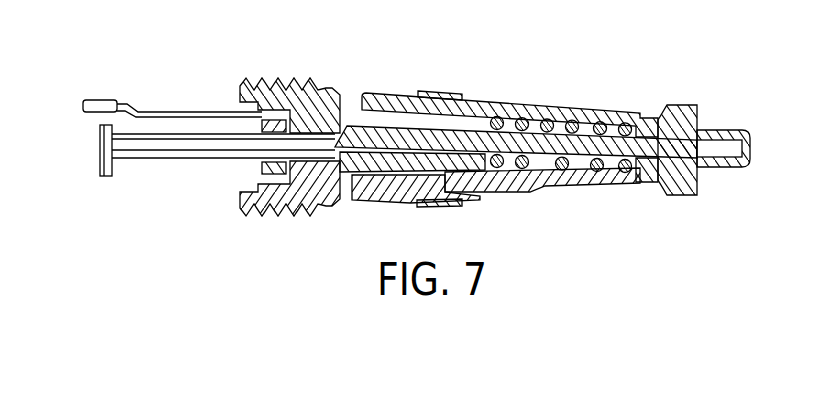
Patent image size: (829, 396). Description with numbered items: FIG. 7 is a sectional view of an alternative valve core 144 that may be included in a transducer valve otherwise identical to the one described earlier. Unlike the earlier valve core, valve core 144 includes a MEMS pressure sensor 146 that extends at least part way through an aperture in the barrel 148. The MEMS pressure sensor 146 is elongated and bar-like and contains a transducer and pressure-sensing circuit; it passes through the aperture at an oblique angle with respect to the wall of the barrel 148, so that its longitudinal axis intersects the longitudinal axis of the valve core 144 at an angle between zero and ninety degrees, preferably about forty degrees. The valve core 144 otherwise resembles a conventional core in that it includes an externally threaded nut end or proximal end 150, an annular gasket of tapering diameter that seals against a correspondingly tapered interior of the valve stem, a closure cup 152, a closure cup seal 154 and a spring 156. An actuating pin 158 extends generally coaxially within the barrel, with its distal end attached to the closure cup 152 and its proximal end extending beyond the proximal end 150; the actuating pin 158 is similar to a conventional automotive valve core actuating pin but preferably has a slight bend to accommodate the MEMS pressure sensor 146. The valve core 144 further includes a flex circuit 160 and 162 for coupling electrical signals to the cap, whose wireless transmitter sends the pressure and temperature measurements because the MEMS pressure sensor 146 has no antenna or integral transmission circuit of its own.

The valve core 144 is at (600, 91).
The MEMS pressure sensor 146 is at (513, 178).
The barrel 148 is at (390, 195).
The proximal end 150 is at (288, 86).
The closure cup 152 is at (698, 107).
The closure cup seal 154 is at (657, 185).
The spring 156 is at (570, 112).
The actuating pin 158 is at (168, 155).
The flex circuit 160 is at (175, 110).
The flex circuit 162 is at (98, 99).